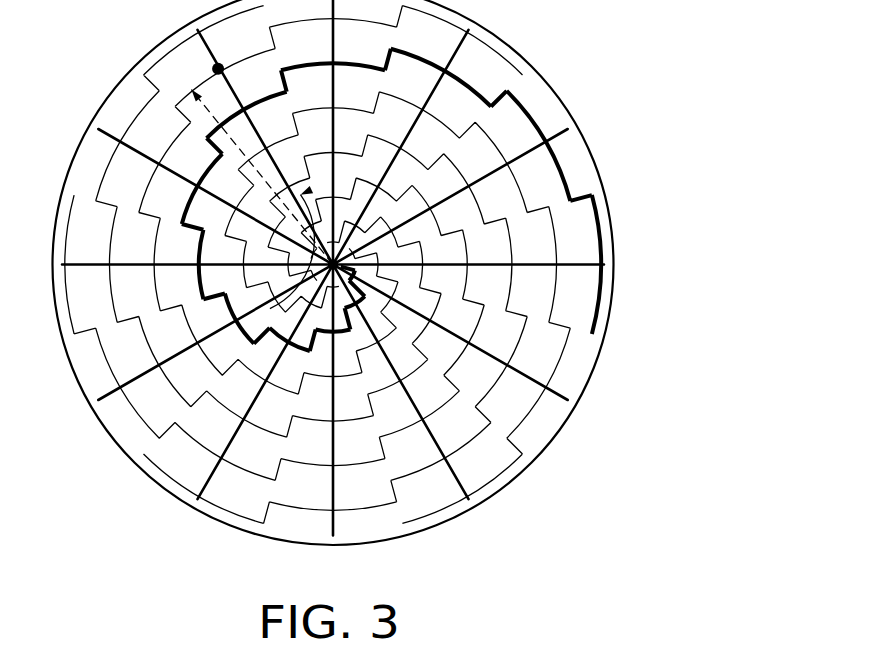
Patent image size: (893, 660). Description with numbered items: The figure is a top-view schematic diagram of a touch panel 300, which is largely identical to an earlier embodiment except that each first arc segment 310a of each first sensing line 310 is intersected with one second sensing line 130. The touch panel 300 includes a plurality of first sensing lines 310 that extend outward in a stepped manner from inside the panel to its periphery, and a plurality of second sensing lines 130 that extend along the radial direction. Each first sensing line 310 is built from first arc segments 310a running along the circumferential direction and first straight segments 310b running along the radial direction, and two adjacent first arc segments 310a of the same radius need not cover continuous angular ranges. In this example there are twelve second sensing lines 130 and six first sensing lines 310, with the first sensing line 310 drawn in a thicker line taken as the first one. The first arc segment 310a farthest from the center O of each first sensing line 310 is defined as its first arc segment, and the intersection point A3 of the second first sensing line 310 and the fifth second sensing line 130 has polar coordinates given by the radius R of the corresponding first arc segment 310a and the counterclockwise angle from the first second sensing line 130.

The touch panel 300 is at (403, 272).
The second sensing line 130 is at (529, 116).
The first sensing line 310 is at (403, 272).
The first arc segment 310a is at (611, 243).
The first straight segment 310b is at (583, 196).
The intersection point A3 is at (212, 64).
The radius R is at (256, 177).
The center O is at (326, 270).